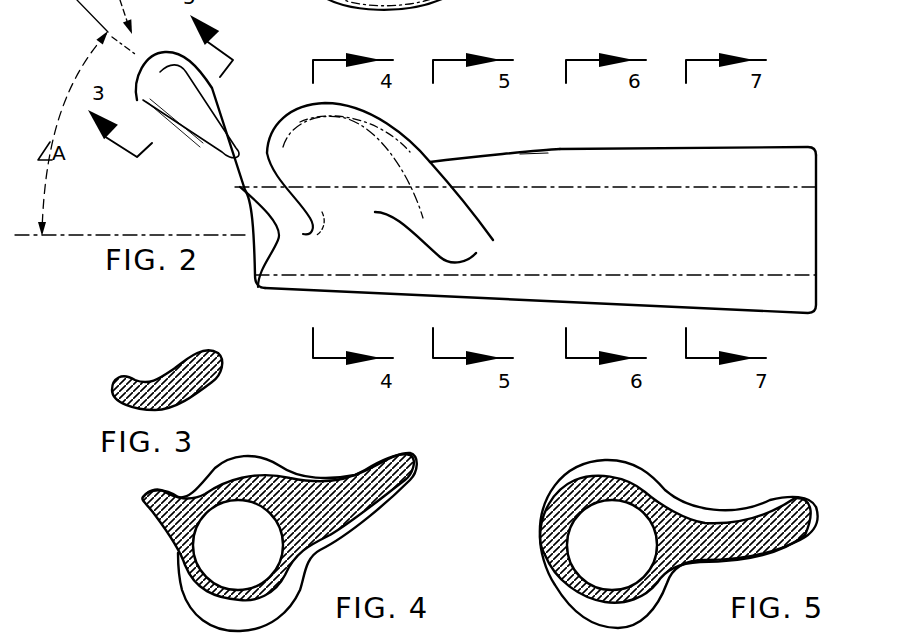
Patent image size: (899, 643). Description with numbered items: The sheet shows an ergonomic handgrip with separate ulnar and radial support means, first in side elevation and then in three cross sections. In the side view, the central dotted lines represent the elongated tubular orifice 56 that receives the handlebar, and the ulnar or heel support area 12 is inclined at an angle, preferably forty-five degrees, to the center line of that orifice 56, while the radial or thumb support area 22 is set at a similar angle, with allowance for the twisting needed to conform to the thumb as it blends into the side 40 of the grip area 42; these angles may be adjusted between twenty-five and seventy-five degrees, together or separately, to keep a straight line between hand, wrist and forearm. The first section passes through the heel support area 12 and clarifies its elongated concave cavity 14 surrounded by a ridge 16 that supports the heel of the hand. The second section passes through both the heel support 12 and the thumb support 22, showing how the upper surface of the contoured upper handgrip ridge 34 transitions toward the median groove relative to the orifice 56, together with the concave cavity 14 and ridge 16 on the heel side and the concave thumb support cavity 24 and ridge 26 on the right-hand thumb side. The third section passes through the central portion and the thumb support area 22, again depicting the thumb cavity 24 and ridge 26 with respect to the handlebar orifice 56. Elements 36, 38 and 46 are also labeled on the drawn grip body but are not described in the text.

In FIG. 3, the ulnar or heel support area 12 is at (156, 352).
In FIG. 4, the ulnar or heel support area 12 is at (139, 534).
In FIG. 5, the ulnar or heel support area 12 is at (518, 542).
In FIG. 2, the elongated concave cavity 14 is at (203, 130).
In FIG. 3, the elongated concave cavity 14 is at (173, 367).
In FIG. 4, the elongated concave cavity 14 is at (197, 490).
In FIG. 2, the ridge 16 is at (180, 56).
In FIG. 3, the ridge 16 is at (124, 377).
In FIG. 4, the ridge 16 is at (138, 495).
In FIG. 2, the radial or thumb support area 22 is at (276, 104).
In FIG. 4, the radial or thumb support area 22 is at (440, 467).
In FIG. 5, the radial or thumb support area 22 is at (803, 462).
In FIG. 4, the concave thumb support cavity 24 is at (340, 474).
In FIG. 5, the concave thumb support cavity 24 is at (740, 517).
In FIG. 2, the ridge 26 is at (373, 134).
In FIG. 4, the ridge 26 is at (400, 450).
In FIG. 5, the ridge 26 is at (812, 497).
In FIG. 2, the contoured upper handgrip ridge 34 is at (682, 143).
In FIG. 5, the contoured upper handgrip ridge 34 is at (610, 460).
In FIG. 2, the end wall 36 is at (817, 218).
In FIG. 2, the flange 38 is at (467, 148).
In FIG. 2, the side 40 is at (643, 247).
In FIG. 5, the side 40 is at (657, 484).
In FIG. 2, the grip area 42 is at (733, 241).
In FIG. 5, the wall portion 46 is at (551, 502).
In FIG. 2, the elongated tubular orifice 56 is at (255, 243).
In FIG. 4, the elongated tubular orifice 56 is at (203, 520).
In FIG. 5, the elongated tubular orifice 56 is at (573, 516).